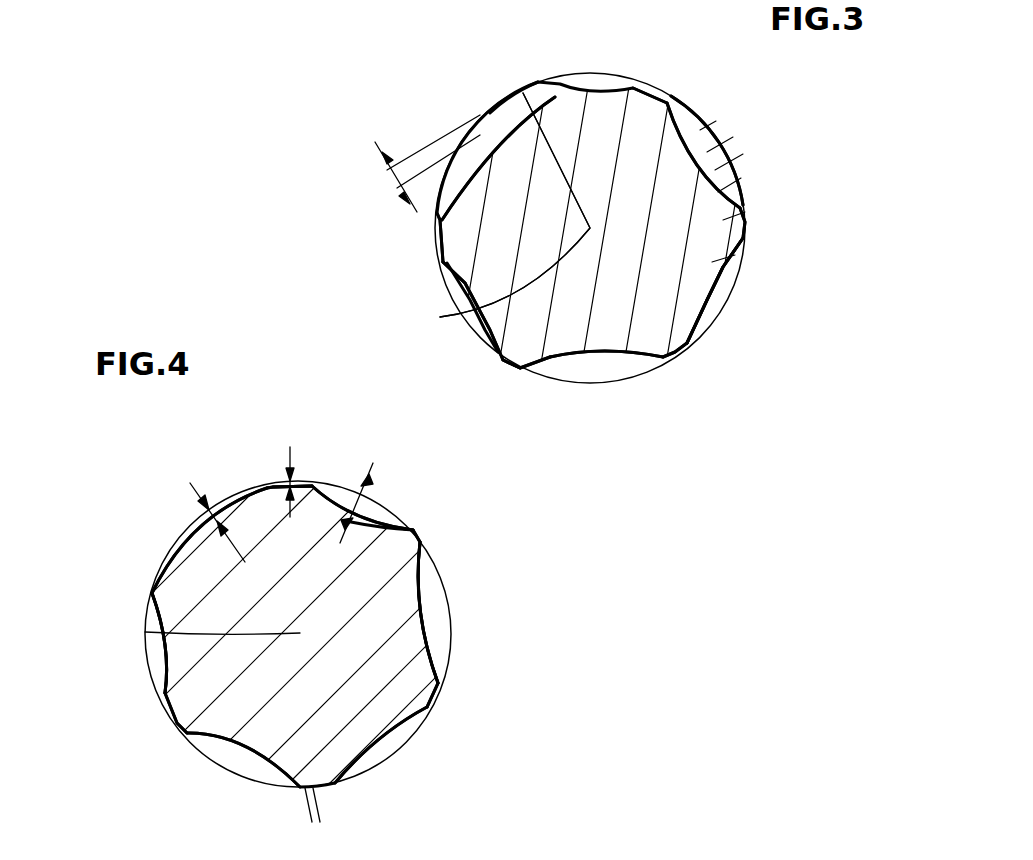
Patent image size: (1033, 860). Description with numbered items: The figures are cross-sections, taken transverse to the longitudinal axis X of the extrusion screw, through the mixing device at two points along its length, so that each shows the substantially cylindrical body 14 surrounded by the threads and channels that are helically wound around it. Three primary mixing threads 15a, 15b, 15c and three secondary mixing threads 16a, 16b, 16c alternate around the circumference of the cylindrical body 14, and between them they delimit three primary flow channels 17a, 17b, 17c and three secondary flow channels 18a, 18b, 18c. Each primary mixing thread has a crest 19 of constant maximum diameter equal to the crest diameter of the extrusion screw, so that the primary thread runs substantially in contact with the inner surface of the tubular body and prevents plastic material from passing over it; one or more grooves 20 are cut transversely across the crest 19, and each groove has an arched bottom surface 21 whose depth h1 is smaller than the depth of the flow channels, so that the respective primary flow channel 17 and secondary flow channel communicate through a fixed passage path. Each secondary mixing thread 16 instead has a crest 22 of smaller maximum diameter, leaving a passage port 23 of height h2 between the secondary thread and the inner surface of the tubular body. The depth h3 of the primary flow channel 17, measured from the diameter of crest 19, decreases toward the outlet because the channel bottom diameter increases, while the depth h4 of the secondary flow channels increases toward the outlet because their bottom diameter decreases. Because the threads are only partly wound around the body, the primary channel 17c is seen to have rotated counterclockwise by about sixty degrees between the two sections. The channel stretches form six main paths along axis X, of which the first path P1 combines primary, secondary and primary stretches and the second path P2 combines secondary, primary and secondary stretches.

In FIG. 3, the cylindrical body 14 is at (652, 240).
In FIG. 4, the cylindrical body 14 is at (342, 691).
In FIG. 3, the primary mixing thread 15a is at (500, 92).
In FIG. 4, the primary mixing thread 15a is at (152, 578).
In FIG. 3, the primary mixing thread 15b is at (507, 357).
In FIG. 4, the primary mixing thread 15b is at (330, 790).
In FIG. 3, the primary mixing thread 15c is at (745, 232).
In FIG. 4, the primary mixing thread 15c is at (420, 540).
In FIG. 3, the secondary mixing thread 16 is at (330, 0).
In FIG. 3, the secondary mixing thread 16a is at (660, 95).
In FIG. 4, the secondary mixing thread 16a is at (268, 480).
In FIG. 3, the secondary mixing thread 16b is at (435, 252).
In FIG. 4, the secondary mixing thread 16b is at (170, 710).
In FIG. 3, the secondary mixing thread 16c is at (340, 0).
In FIG. 4, the secondary mixing thread 16c is at (436, 703).
In FIG. 3, the primary flow channel 17 is at (160, 4).
In FIG. 3, the primary flow channel 17a is at (438, 213).
In FIG. 4, the primary flow channel 17a is at (158, 662).
In FIG. 3, the primary flow channel 17b is at (583, 370).
In FIG. 4, the primary flow channel 17b is at (395, 735).
In FIG. 3, the primary flow channel 17c is at (735, 162).
In FIG. 4, the primary flow channel 17c is at (347, 500).
In FIG. 3, the secondary flow channel 18a is at (640, 80).
In FIG. 4, the secondary flow channel 18a is at (190, 543).
In FIG. 3, the secondary flow channel 18b is at (480, 335).
In FIG. 4, the secondary flow channel 18b is at (217, 745).
In FIG. 3, the secondary flow channel 18c is at (430, 0).
In FIG. 4, the secondary flow channel 18c is at (435, 620).
In FIG. 3, the crest 19 is at (535, 110).
In FIG. 4, the crest 19 is at (415, 532).
In FIG. 3, the groove 20 is at (522, 100).
In FIG. 3, the bottom surface 21 is at (545, 97).
In FIG. 3, the crest 22 is at (648, 95).
In FIG. 4, the crest 22 is at (303, 480).
In FIG. 3, the passage port 23 is at (672, 92).
In FIG. 3, the first path P1 is at (720, 132).
In FIG. 4, the first path P1 is at (373, 510).
In FIG. 3, the second path P2 is at (722, 284).
In FIG. 4, the second path P2 is at (440, 643).
In FIG. 3, the longitudinal axis X is at (445, 316).
In FIG. 4, the longitudinal axis X is at (145, 632).
In FIG. 3, the groove depth h1 is at (410, 165).
In FIG. 4, the passage port height h2 is at (288, 457).
In FIG. 4, the primary flow channel depth h3 is at (373, 470).
In FIG. 4, the secondary flow channel depth h4 is at (215, 512).